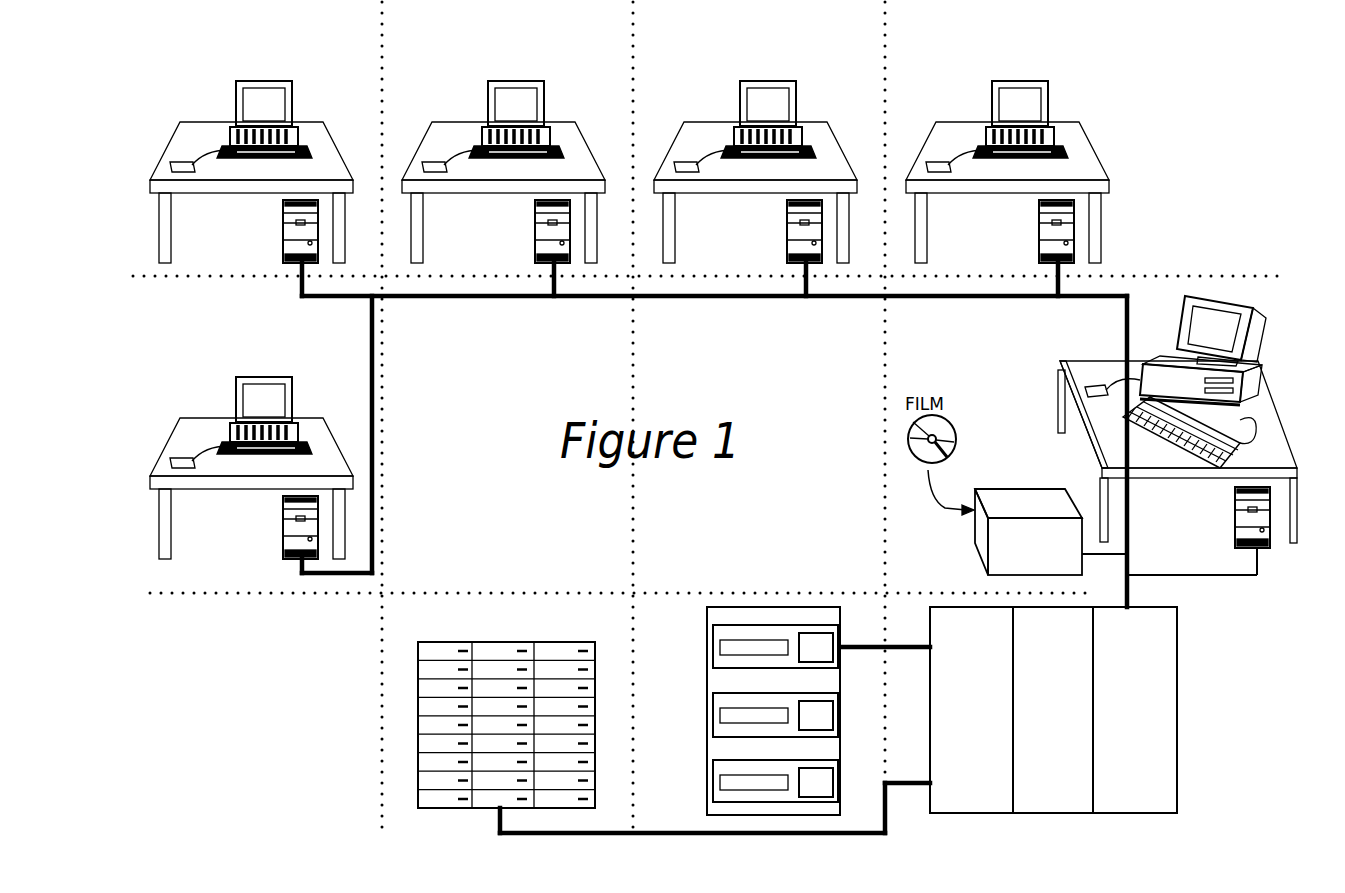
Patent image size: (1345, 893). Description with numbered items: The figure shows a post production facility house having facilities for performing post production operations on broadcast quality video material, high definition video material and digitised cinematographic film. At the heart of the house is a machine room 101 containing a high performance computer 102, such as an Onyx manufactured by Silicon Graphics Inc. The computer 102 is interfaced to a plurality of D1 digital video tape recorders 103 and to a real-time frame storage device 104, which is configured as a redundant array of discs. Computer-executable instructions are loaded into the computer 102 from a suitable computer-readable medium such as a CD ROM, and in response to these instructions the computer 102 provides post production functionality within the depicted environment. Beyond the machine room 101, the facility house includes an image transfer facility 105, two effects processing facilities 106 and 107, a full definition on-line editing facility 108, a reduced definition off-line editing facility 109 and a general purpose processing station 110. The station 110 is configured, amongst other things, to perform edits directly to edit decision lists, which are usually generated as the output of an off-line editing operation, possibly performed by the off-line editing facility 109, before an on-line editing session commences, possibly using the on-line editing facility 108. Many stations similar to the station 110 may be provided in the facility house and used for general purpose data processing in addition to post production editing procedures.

The machine room 101 is at (508, 607).
The high performance computer 102 is at (1162, 753).
The D1 digital video tape recorders 103 is at (707, 657).
The real-time frame storage device 104 is at (560, 640).
The image transfer facility 105 is at (898, 352).
The effects processing facility 106 is at (1112, 88).
The effects processing facility 107 is at (862, 88).
The full definition on-line editing facility 108 is at (606, 88).
The reduced definition off-line editing facility 109 is at (354, 88).
The general purpose processing station 110 is at (354, 385).